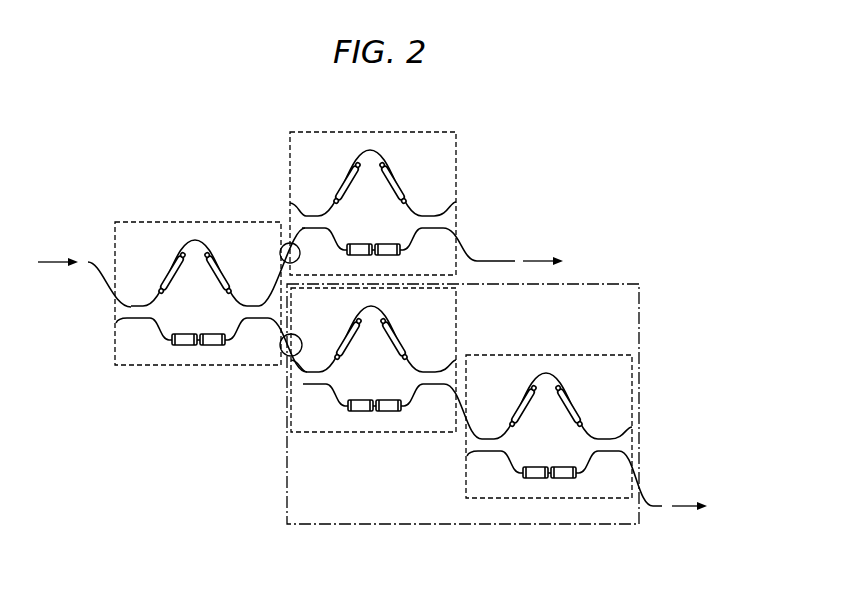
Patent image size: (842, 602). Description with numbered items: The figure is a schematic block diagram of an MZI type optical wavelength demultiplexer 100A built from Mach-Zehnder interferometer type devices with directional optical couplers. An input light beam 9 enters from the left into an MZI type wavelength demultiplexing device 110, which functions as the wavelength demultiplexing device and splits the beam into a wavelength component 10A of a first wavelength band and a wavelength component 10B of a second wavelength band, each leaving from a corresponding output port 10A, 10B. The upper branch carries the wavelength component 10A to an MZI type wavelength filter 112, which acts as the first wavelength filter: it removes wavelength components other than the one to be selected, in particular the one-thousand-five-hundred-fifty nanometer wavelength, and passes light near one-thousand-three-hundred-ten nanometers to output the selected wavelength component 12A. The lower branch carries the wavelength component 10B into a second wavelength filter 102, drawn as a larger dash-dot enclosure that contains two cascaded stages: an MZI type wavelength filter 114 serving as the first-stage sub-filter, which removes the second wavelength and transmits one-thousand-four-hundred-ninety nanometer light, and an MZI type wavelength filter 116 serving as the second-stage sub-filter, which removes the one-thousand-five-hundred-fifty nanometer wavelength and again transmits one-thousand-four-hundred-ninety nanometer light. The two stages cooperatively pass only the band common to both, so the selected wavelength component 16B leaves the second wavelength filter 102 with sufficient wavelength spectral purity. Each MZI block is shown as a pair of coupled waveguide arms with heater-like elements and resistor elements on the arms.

The input light beam 9 is at (102, 268).
The MZI type optical wavelength demultiplexer 100A is at (578, 152).
The second wavelength filter 102 is at (350, 524).
The MZI type wavelength demultiplexing device 110 is at (163, 222).
The MZI type wavelength filter 112 is at (380, 132).
The MZI type wavelength filter 114 is at (387, 432).
The MZI type wavelength filter 116 is at (553, 355).
The wavelength component of first wavelength band 10A is at (281, 250).
The wavelength component of second wavelength band 10B is at (287, 365).
The selected wavelength component 12A is at (500, 260).
The selected wavelength component 16B is at (651, 498).